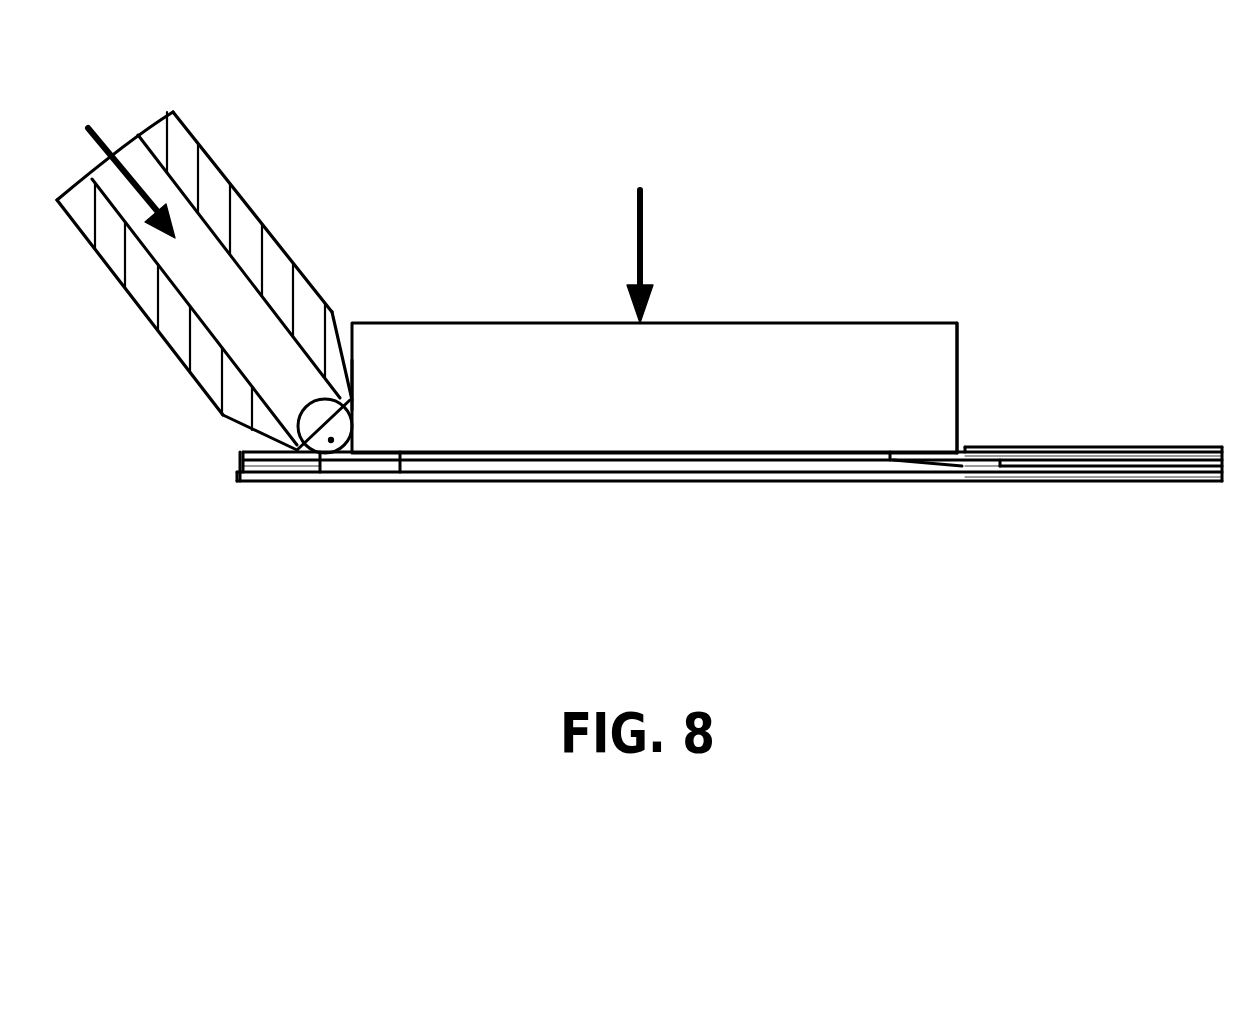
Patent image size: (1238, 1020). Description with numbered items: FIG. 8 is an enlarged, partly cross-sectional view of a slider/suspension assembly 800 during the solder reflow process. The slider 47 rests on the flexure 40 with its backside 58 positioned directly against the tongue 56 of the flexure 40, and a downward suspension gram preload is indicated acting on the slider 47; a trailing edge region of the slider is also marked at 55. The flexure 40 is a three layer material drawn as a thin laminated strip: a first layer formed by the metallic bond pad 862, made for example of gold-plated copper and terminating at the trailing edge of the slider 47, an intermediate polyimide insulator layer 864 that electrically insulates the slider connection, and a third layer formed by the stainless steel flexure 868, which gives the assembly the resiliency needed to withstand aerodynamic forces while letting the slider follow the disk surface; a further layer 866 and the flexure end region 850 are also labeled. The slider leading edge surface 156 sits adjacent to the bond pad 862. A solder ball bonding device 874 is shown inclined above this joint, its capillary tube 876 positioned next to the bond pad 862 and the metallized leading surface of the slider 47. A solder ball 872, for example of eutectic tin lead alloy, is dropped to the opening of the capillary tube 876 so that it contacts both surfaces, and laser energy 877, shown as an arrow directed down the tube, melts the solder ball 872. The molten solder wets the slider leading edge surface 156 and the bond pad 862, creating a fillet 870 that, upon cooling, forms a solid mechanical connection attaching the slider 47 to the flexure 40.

The slider/suspension assembly 800 is at (670, 53).
The laser energy 877 is at (112, 158).
The capillary tube 876 is at (216, 280).
The solder ball bonding device 874 is at (231, 271).
The solder ball 872 is at (259, 437).
The fillet 870 is at (389, 464).
The slider leading edge surface 156 is at (408, 374).
The slider 47 is at (653, 402).
The slider trailing edge 55 is at (1004, 388).
The tongue 56 is at (732, 441).
The backside 58 is at (732, 421).
The flexure 40 is at (729, 488).
The flexure assembly 850 is at (222, 494).
The metallic bond pad 862 is at (732, 499).
The polyimide insulator layer 864 is at (1093, 511).
The top layer 866 is at (1093, 416).
The stainless steel flexure 868 is at (1093, 534).